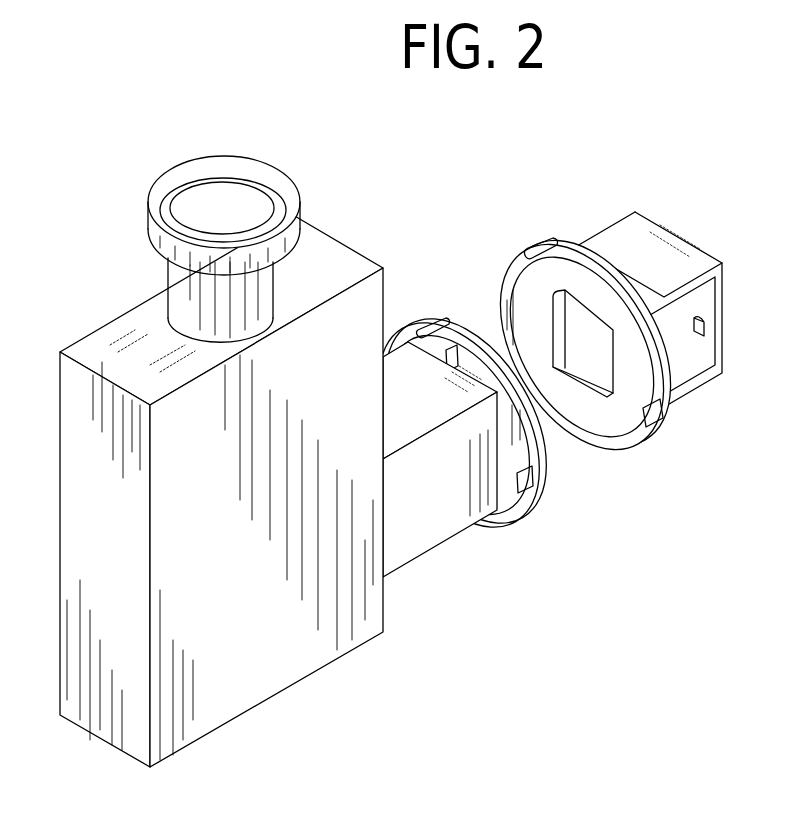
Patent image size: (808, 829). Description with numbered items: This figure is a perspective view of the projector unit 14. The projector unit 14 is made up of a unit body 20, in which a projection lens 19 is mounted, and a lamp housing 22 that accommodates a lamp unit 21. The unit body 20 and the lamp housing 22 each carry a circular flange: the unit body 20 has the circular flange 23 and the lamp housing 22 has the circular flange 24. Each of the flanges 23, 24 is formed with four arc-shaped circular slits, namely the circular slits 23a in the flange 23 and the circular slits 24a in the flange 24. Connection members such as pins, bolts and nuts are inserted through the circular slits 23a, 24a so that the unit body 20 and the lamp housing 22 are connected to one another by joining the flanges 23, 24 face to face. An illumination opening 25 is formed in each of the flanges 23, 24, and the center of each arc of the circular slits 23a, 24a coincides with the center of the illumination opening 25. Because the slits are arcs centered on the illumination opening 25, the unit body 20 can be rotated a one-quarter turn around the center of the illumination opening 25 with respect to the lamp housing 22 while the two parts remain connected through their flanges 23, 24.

The projector unit 14 is at (518, 613).
The projection lens 19 is at (187, 200).
The unit body 20 is at (282, 655).
The lamp unit 21 is at (706, 317).
The lamp housing 22 is at (668, 224).
The circular flange 23 is at (441, 316).
The circular slits 23a is at (457, 358).
The circular flange 24 is at (553, 238).
The circular slits 24a is at (533, 243).
The illumination opening 25 is at (633, 443).